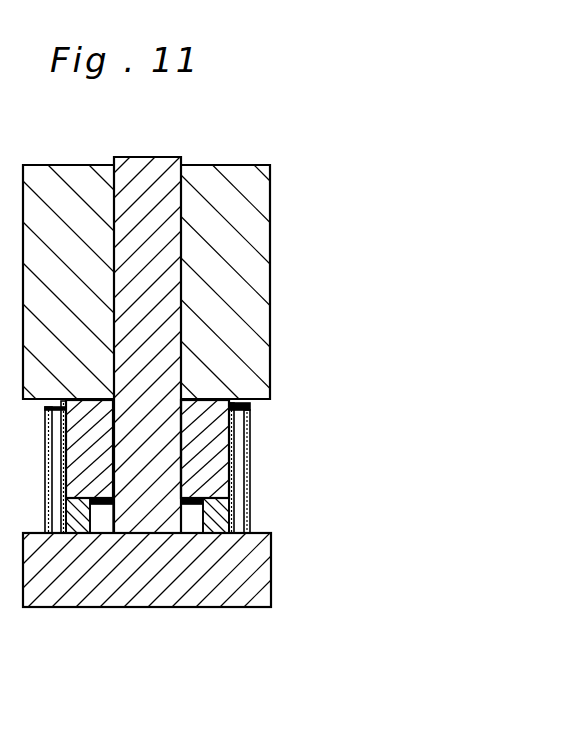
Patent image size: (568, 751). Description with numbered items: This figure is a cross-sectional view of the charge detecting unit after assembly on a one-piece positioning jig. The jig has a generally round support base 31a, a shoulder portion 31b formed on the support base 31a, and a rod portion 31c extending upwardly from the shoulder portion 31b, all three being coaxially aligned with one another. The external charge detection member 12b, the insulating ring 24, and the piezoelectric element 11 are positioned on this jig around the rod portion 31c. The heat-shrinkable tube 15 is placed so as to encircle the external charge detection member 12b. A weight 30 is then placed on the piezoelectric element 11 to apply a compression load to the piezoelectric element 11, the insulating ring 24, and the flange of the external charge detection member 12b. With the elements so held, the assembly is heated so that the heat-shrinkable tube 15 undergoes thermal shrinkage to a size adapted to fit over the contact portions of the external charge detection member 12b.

The weight 30 is at (261, 197).
The rod portion 31c is at (148, 277).
The support base 31a is at (152, 587).
The shoulder portion 31b is at (192, 522).
The piezoelectric element 11 is at (213, 447).
The external charge detection member 12b is at (229, 494).
The heat-shrinkable tube 15 is at (251, 426).
The insulating ring 24 is at (70, 520).